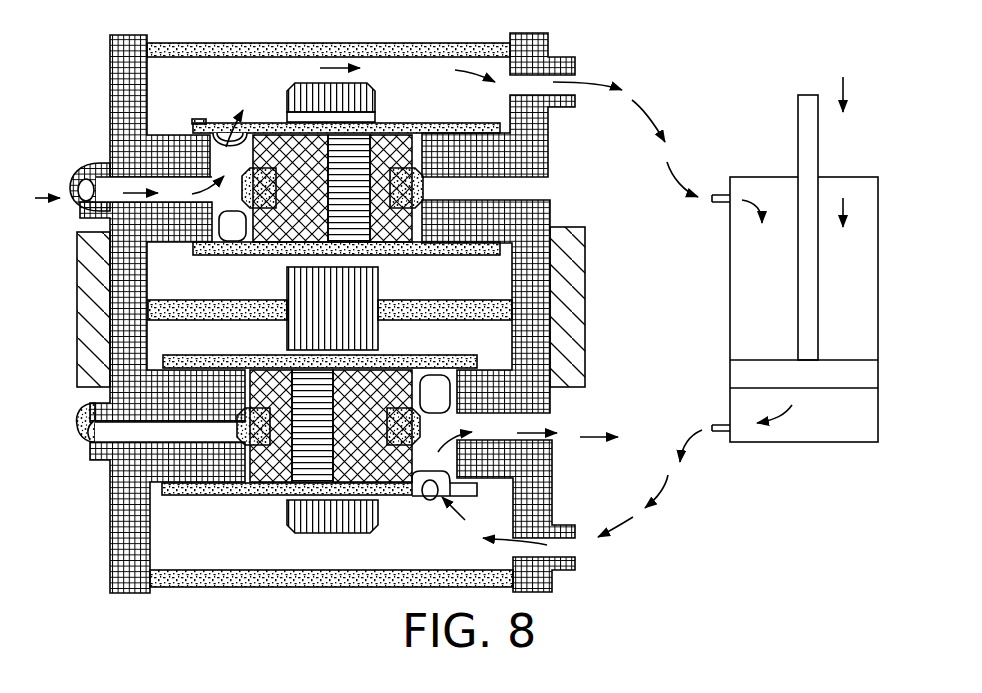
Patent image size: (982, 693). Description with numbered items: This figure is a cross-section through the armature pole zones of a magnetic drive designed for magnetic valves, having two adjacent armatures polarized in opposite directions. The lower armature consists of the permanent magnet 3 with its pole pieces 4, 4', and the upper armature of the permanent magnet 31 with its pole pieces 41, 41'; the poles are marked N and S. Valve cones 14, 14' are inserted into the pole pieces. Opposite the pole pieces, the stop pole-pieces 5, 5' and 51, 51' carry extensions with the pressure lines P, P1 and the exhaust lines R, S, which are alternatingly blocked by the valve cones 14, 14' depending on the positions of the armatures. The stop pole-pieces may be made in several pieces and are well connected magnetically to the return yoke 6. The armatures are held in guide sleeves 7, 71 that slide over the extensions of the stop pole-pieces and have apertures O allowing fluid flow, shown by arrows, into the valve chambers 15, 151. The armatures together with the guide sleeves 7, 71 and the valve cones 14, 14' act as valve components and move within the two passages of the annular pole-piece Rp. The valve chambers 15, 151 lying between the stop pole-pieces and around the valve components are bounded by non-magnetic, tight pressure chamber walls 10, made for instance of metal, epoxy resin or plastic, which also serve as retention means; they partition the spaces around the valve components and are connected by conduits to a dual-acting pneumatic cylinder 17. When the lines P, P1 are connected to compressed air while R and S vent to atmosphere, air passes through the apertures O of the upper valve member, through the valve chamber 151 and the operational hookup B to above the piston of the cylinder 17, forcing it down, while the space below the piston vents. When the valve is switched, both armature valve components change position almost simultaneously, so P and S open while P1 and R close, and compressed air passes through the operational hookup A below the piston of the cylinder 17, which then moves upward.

The pressure chamber wall 10 is at (316, 44).
The stop pole-piece 5 is at (162, 397).
The stop pole-piece 51 is at (160, 106).
The stop pole-piece 5' is at (486, 306).
The stop pole-piece 51' is at (498, 105).
The return yoke 6 is at (90, 299).
The guide sleeve 7 is at (197, 493).
The guide sleeve 71 is at (455, 108).
The pole piece 4 is at (271, 426).
The pole piece 41 is at (290, 188).
The pole piece 4' is at (372, 426).
The pole piece 41' is at (391, 188).
The permanent magnet 3 is at (318, 414).
The permanent magnet 31 is at (356, 155).
The valve cone 14 is at (253, 336).
The valve cone 14' is at (405, 306).
The valve chamber 15 is at (494, 523).
The valve chamber 151 is at (262, 104).
The dual-acting pneumatic cylinder 17 is at (771, 284).
The annular pole-piece Rp is at (300, 300).
The aperture O is at (334, 355).
The pressure line P is at (146, 419).
The pressure line P1 is at (127, 182).
The operational hookup B is at (625, 120).
The operational hookup A is at (646, 483).
The exhaust line R is at (528, 512).
The exhaust line S is at (401, 234).
The north pole N is at (312, 228).